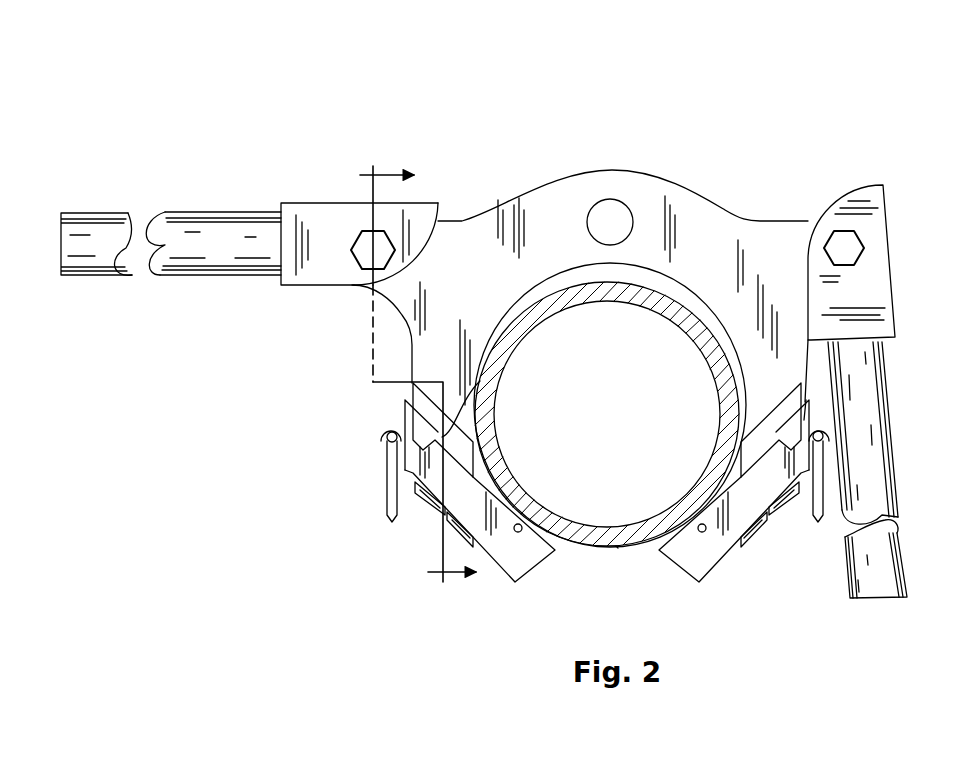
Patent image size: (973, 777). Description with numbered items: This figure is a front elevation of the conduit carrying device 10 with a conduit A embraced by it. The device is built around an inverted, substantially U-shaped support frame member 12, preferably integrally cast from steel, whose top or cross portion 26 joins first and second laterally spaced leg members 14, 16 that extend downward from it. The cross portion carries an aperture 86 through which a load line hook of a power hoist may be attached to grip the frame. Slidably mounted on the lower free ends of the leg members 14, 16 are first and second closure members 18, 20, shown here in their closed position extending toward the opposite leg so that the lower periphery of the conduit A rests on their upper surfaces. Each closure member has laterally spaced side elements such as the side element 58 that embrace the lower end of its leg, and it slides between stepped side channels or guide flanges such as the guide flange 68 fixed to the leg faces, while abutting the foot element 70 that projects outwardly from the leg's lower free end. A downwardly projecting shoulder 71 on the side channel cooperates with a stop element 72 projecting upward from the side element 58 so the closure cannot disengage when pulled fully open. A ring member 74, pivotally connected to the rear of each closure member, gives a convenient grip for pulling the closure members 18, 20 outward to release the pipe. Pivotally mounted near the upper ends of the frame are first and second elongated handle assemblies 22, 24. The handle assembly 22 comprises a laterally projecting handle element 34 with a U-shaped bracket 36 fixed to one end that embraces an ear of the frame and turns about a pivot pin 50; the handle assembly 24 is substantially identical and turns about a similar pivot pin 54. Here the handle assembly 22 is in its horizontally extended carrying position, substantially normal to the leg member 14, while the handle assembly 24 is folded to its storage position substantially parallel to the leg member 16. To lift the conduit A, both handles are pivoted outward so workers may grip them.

The conduit carrying device 10 is at (668, 106).
The support frame member 12 is at (721, 204).
The first leg member 14 is at (433, 350).
The second leg member 16 is at (772, 381).
The first closure member 18 is at (518, 586).
The second closure member 20 is at (729, 562).
The first elongated handle assembly 22 is at (209, 210).
The second elongated handle assembly 24 is at (900, 432).
The cross portion 26 is at (514, 230).
The handle element 34 is at (222, 277).
The U-shaped bracket 36 is at (319, 289).
The pivot pin 50 is at (382, 248).
The pivot pin 54 is at (843, 252).
The side element 58 is at (500, 545).
The guide flange 68 is at (477, 395).
The foot element 70 is at (483, 548).
The shoulder 71 is at (415, 441).
The stop element 72 is at (678, 520).
The ring member 74 is at (388, 516).
The aperture 86 is at (608, 222).
The conduit A is at (618, 548).